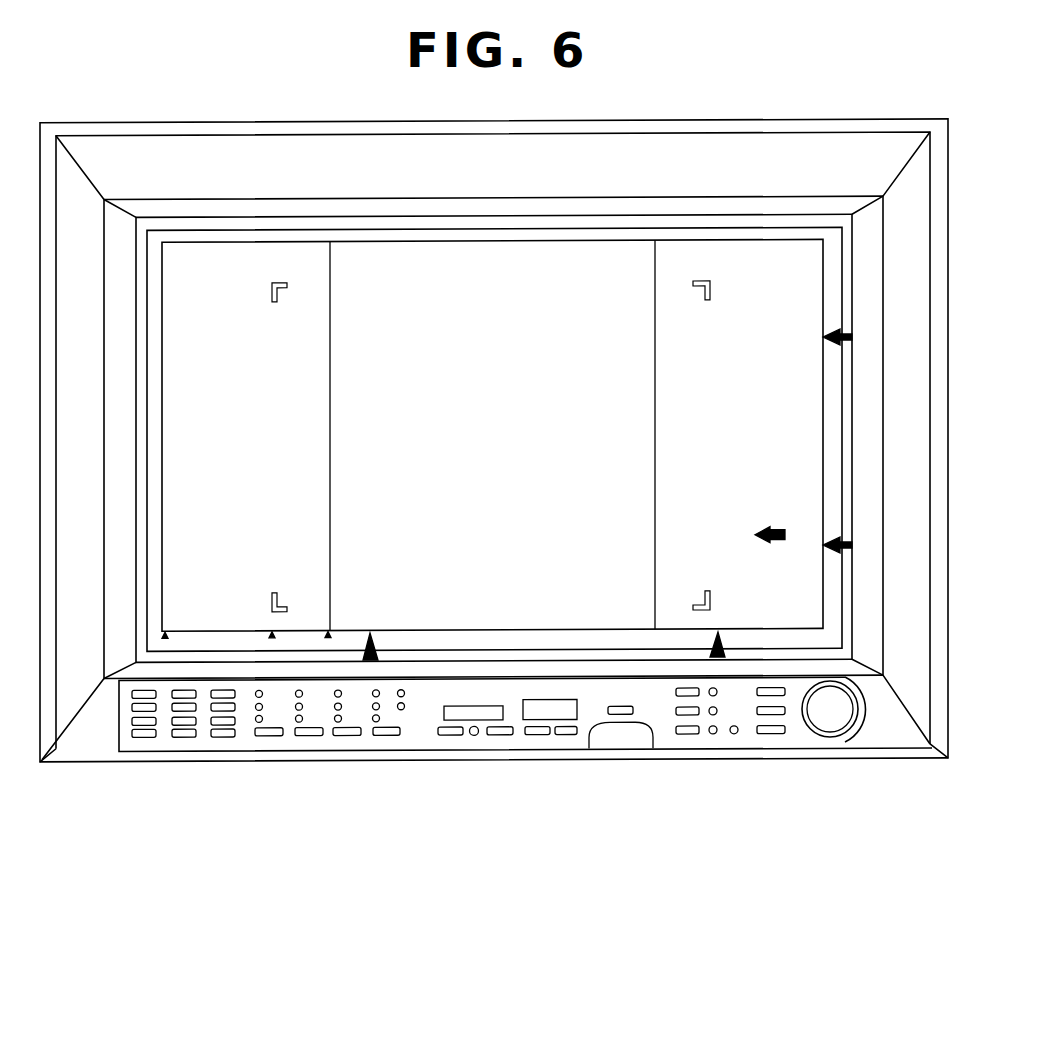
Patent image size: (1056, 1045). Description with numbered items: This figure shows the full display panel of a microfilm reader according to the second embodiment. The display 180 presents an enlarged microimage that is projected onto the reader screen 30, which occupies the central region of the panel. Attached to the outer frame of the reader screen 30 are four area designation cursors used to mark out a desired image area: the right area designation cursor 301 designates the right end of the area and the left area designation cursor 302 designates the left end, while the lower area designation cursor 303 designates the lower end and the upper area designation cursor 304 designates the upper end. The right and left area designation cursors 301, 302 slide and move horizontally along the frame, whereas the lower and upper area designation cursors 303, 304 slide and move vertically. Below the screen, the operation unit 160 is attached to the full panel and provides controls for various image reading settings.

The display 180 is at (867, 234).
The reader screen 30 is at (807, 288).
The upper area designation cursor 304 is at (852, 337).
The lower area designation cursor 303 is at (852, 545).
The left area designation cursor 302 is at (370, 662).
The right area designation cursor 301 is at (718, 657).
The operation unit 160 is at (863, 702).